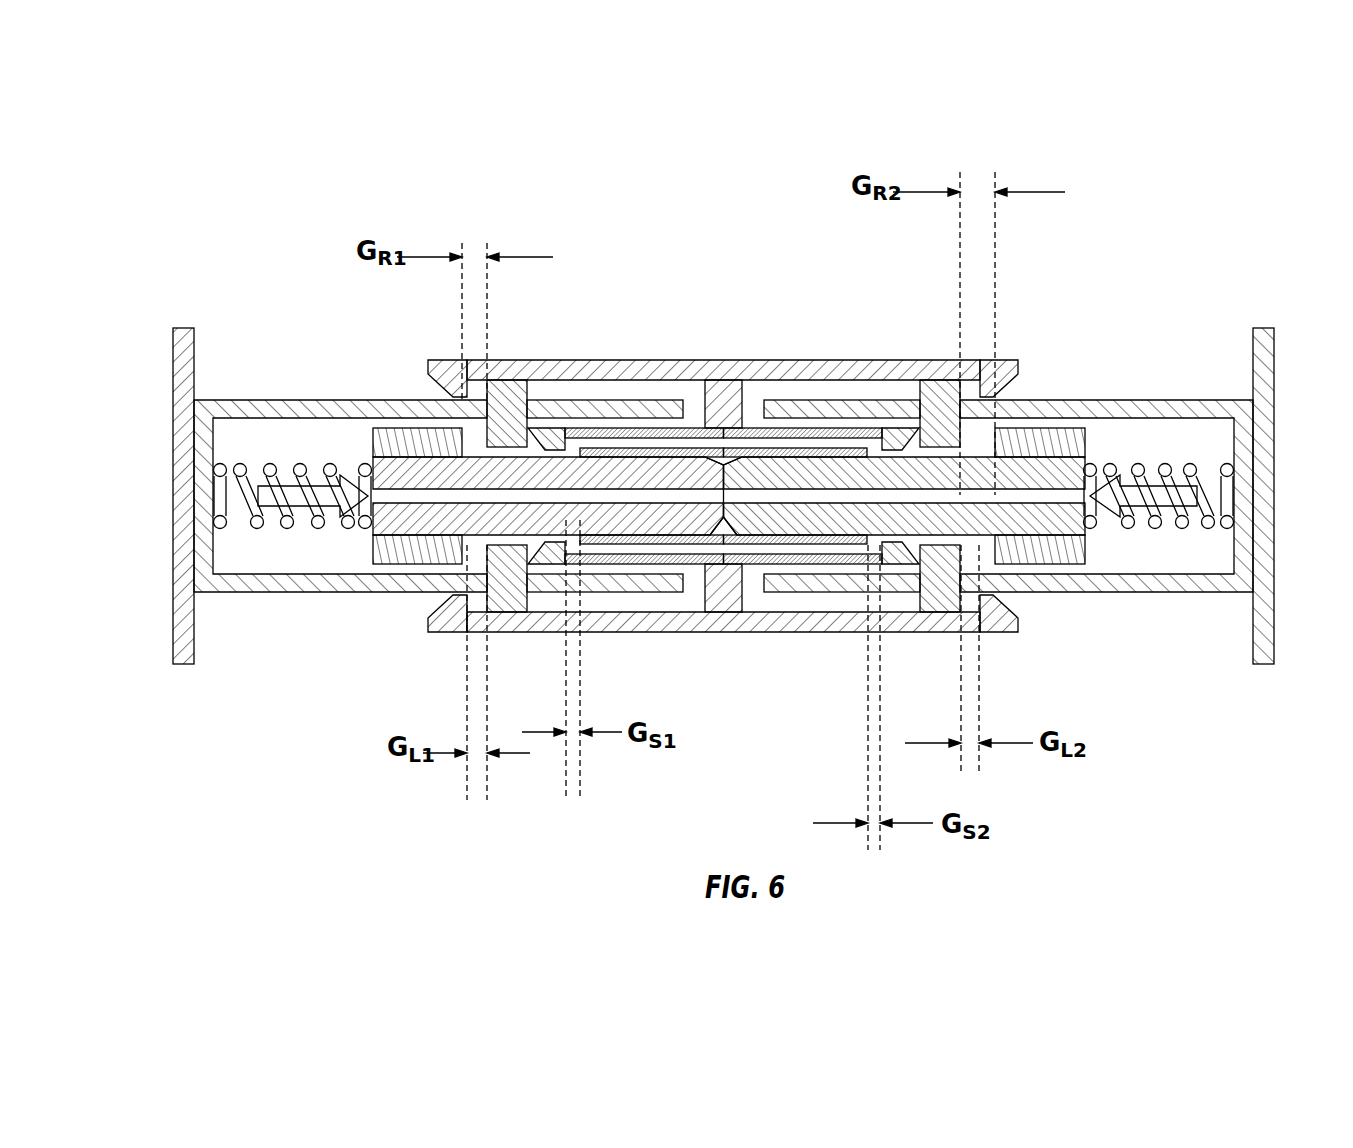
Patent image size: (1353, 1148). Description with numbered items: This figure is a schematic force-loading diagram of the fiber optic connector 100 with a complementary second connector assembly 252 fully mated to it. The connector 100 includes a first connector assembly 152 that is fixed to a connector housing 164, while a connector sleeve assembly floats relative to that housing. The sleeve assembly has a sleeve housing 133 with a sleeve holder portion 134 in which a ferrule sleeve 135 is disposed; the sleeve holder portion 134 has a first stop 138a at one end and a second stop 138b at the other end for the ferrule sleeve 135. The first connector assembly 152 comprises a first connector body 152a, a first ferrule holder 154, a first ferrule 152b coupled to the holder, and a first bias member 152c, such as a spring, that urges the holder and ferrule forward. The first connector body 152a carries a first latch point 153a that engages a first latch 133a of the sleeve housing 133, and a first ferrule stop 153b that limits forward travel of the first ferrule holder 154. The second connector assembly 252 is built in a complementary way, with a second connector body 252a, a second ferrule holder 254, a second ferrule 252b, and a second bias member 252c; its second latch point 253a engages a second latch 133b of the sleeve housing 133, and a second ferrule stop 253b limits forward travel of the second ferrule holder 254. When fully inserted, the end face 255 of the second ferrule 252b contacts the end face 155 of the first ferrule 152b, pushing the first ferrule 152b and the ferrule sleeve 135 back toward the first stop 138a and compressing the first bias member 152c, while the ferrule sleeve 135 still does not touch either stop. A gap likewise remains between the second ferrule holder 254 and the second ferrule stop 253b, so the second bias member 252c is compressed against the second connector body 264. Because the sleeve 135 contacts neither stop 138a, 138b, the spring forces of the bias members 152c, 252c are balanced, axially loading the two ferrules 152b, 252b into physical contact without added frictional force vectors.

The fiber optic connector 100 is at (409, 210).
The sleeve housing 133 is at (633, 360).
The first latch 133a is at (453, 395).
The second latch 133b is at (1018, 628).
The sleeve holder portion 134 is at (720, 428).
The ferrule sleeve 135 is at (745, 458).
The first stop 138a is at (555, 440).
The second stop 138b is at (903, 430).
The first connector assembly 152 is at (296, 310).
The first connector body 152a is at (252, 405).
The first ferrule 152b is at (410, 520).
The first bias member 152c is at (265, 462).
The first latch point 153a is at (515, 380).
The first ferrule stop 153b is at (500, 440).
The first ferrule holder 154 is at (378, 428).
The end face of the first ferrule 155 is at (730, 500).
The connector housing 164 is at (173, 372).
The second connector assembly 252 is at (1126, 313).
The second connector body 252a is at (1180, 400).
The second ferrule 252b is at (1070, 525).
The second bias member 252c is at (1188, 465).
The second latch point 253a is at (930, 388).
The second ferrule stop 253b is at (948, 445).
The second ferrule holder 254 is at (1045, 425).
The end face of the second ferrule 255 is at (720, 525).
The second connector body 264 is at (1276, 355).